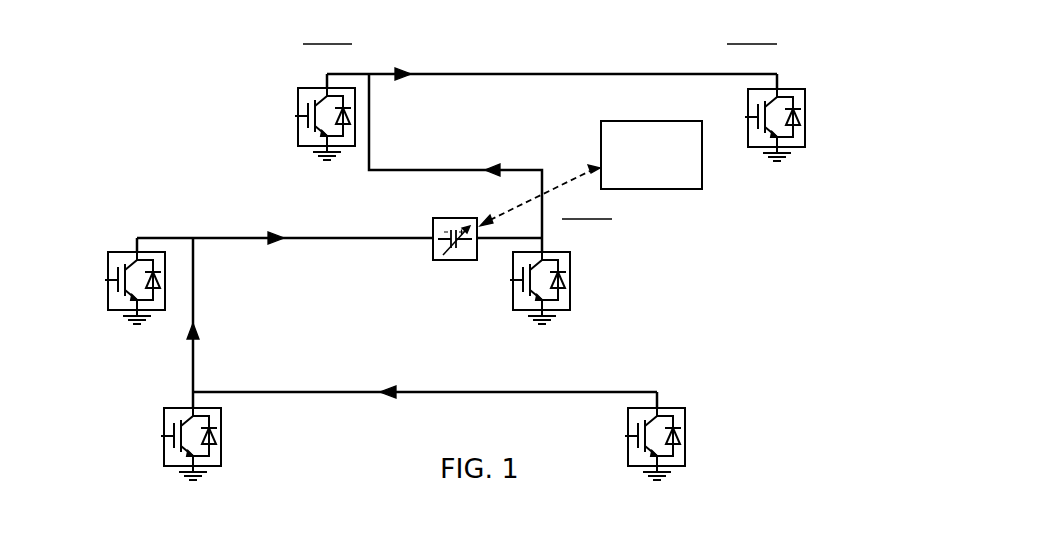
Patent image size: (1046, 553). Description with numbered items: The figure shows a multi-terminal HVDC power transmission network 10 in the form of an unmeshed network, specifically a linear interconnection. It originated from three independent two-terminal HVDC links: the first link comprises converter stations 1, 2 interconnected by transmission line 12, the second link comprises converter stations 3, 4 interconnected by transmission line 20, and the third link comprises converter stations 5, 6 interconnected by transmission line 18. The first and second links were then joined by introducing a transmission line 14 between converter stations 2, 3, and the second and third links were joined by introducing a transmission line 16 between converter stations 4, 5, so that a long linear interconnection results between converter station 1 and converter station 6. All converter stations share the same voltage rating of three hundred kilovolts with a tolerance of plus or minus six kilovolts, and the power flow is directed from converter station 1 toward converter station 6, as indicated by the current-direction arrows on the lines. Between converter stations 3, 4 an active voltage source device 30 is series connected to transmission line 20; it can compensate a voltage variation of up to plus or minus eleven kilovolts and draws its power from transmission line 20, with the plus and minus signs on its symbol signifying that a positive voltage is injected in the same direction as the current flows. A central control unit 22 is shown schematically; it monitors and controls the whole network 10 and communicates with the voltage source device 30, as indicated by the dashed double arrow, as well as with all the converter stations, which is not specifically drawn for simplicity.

The multi-terminal HVDC power transmission network 10 is at (158, 93).
The converter station 1 is at (682, 463).
The converter station 2 is at (170, 465).
The converter station 3 is at (117, 308).
The converter station 4 is at (522, 308).
The converter station 5 is at (297, 133).
The converter station 6 is at (749, 147).
The transmission line 12 is at (348, 392).
The transmission line 14 is at (195, 265).
The transmission line 16 is at (451, 168).
The transmission line 18 is at (510, 73).
The transmission line 20 is at (382, 240).
The central control unit 22 is at (591, 173).
The active voltage source device 30 is at (461, 260).